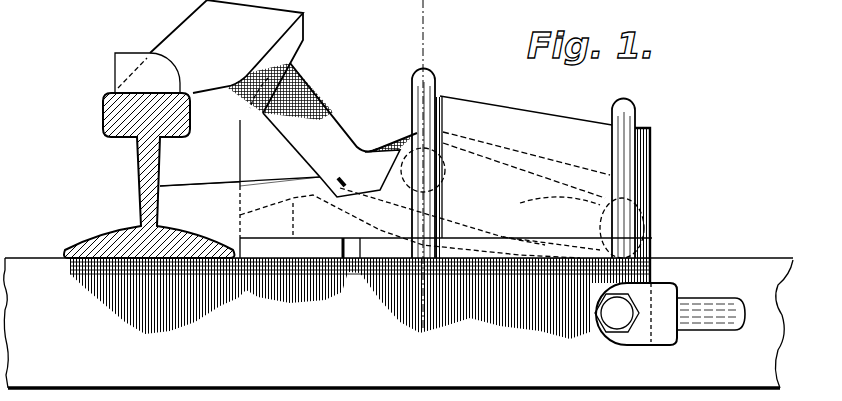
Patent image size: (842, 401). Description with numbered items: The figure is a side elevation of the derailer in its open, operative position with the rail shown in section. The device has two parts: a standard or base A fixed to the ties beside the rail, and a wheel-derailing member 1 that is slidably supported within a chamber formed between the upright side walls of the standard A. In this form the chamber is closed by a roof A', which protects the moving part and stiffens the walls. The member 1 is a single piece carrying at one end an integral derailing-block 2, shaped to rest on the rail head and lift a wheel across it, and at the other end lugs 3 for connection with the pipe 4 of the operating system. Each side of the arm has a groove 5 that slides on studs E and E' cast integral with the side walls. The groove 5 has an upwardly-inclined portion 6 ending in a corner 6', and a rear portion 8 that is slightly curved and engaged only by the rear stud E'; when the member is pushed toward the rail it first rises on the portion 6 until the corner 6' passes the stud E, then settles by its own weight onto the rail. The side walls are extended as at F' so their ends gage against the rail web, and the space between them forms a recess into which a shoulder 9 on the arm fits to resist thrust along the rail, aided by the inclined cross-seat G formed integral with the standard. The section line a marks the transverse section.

The wheel-derailing member 1 is at (345, 121).
The derailing-block 2 is at (186, 18).
The lug 3 is at (604, 342).
The pipe 4 is at (690, 316).
The groove 5 is at (283, 137).
The upwardly-inclined portion 6 is at (305, 145).
The corner 6' is at (336, 173).
The rear groove portion 8 is at (558, 196).
The shoulder 9 is at (237, 168).
The standard A is at (659, 235).
The roof A' is at (526, 130).
The forward stud E is at (437, 164).
The rear stud E' is at (614, 179).
The side wall extension F' is at (200, 163).
The cross-seat G is at (257, 206).
The section line a is at (472, 25).